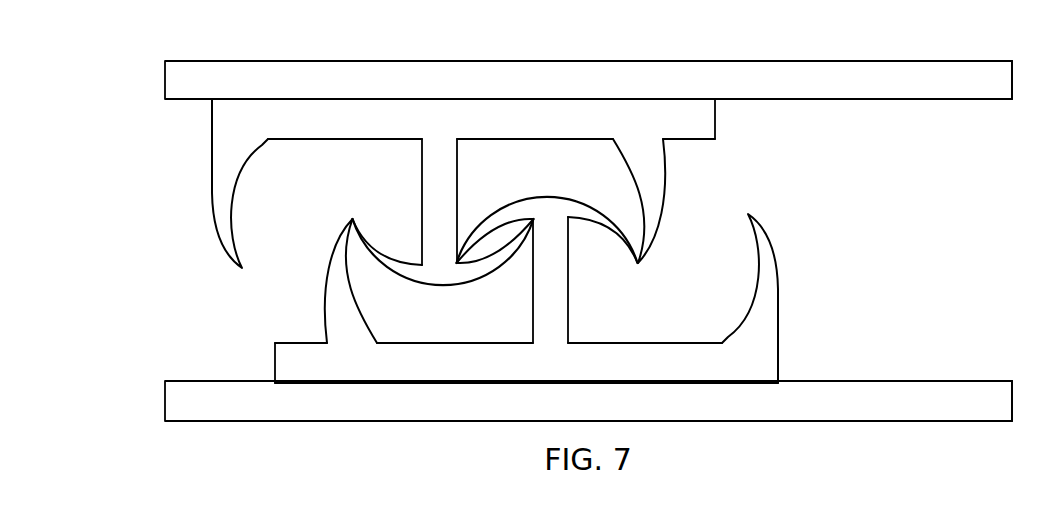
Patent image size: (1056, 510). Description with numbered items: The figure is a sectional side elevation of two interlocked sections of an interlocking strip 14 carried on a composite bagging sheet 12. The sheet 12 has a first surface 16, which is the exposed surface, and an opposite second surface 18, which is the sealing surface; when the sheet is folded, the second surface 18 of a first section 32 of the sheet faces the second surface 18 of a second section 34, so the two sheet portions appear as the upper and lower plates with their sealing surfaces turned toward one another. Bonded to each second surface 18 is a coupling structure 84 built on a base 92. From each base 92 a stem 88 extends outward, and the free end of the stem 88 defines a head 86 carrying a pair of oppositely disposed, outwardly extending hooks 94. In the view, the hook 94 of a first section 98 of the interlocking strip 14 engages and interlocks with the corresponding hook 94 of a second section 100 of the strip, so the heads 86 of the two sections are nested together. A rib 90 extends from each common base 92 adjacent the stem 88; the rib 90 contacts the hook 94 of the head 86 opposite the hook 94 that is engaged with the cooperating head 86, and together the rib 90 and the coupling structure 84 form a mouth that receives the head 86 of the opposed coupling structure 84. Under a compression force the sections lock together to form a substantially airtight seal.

The composite bagging sheet 12 is at (963, 61).
The interlocking strip 14 is at (142, 112).
The first surface 16 is at (863, 61).
The second surface 18 is at (863, 99).
The first section 32 is at (215, 421).
The second section 34 is at (222, 61).
The coupling structure 84 is at (462, 146).
The head 86 is at (548, 150).
The stem 88 is at (420, 175).
The rib 90 is at (670, 175).
The base 92 is at (716, 118).
The hook 94 is at (362, 230).
The first section of the interlocking strip 98 is at (260, 360).
The second section of the interlocking strip 100 is at (194, 203).